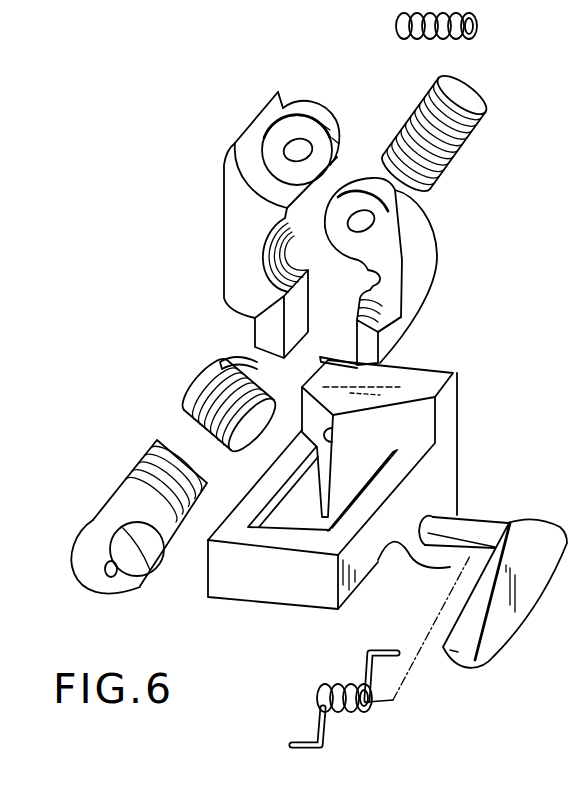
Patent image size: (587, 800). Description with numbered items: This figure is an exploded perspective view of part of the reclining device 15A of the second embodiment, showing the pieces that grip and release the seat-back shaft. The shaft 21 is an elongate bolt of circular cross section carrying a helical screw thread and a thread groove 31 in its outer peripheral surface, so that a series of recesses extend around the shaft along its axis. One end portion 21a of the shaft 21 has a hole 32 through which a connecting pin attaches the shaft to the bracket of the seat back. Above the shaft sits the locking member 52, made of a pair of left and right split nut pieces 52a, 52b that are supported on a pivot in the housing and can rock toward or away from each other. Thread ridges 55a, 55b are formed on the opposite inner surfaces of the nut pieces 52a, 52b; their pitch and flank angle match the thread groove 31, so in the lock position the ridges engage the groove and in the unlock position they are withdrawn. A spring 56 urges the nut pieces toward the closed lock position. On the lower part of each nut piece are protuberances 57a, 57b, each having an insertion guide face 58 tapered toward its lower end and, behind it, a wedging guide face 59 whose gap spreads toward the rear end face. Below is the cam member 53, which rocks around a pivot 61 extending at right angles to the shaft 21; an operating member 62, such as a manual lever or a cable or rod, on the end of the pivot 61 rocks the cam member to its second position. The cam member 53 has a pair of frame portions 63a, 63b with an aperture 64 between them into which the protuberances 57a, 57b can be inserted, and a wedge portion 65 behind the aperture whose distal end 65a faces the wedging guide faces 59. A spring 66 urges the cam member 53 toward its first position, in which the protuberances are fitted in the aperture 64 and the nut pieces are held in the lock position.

The reclining device 15A is at (141, 236).
The spring 56 is at (410, 44).
The locking member 52 is at (229, 147).
The split nut piece 52a is at (228, 193).
The split nut piece 52b is at (426, 220).
The thread ridge 55a is at (278, 267).
The thread ridge 55b is at (400, 272).
The protuberance 57a is at (240, 317).
The protuberance 57b is at (410, 323).
The insertion guide face 58 is at (240, 358).
The wedging guide face 59 is at (362, 307).
The cam member 53 is at (466, 386).
The wedge portion 65 is at (333, 474).
The distal end 65a is at (333, 442).
The frame portion 63a is at (258, 502).
The frame portion 63b is at (343, 530).
The aperture 64 is at (310, 522).
The pivot 61 is at (477, 520).
The operating member 62 is at (495, 640).
The spring 66 is at (342, 715).
The shaft 21 is at (118, 495).
The end portion 21a is at (73, 550).
The hole 32 is at (115, 578).
The thread groove 31 is at (205, 385).